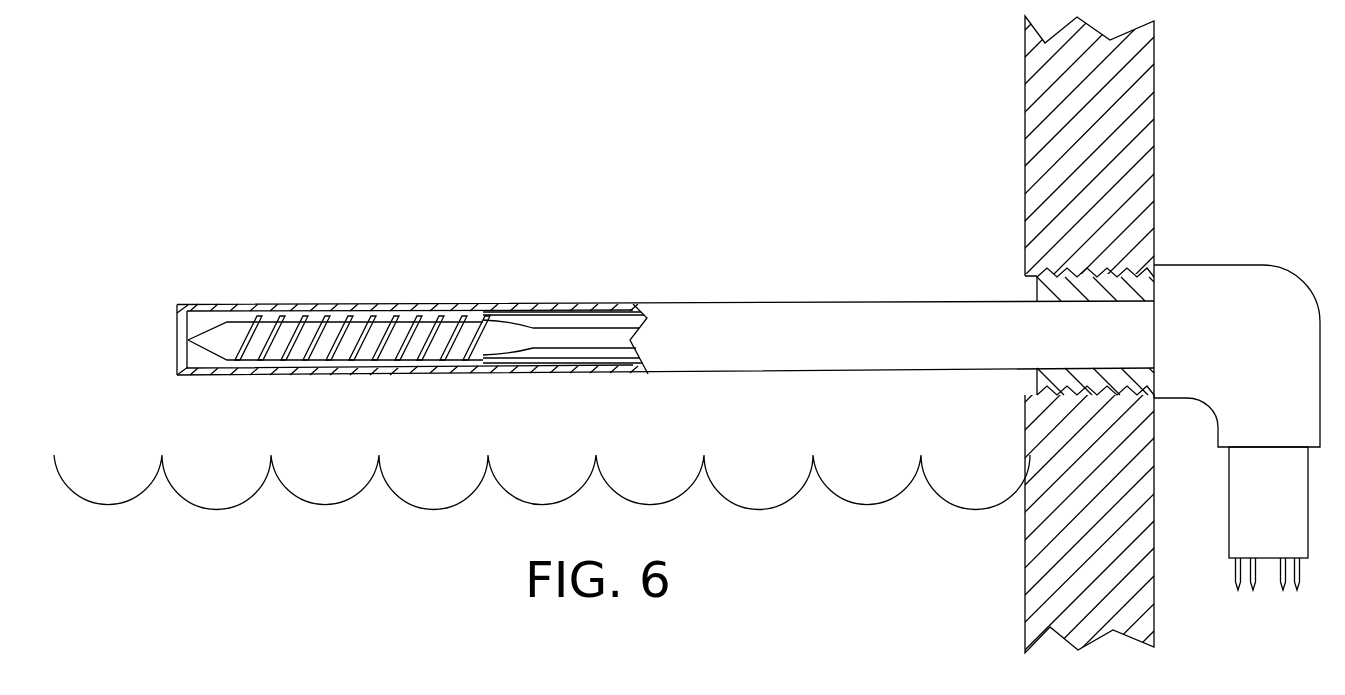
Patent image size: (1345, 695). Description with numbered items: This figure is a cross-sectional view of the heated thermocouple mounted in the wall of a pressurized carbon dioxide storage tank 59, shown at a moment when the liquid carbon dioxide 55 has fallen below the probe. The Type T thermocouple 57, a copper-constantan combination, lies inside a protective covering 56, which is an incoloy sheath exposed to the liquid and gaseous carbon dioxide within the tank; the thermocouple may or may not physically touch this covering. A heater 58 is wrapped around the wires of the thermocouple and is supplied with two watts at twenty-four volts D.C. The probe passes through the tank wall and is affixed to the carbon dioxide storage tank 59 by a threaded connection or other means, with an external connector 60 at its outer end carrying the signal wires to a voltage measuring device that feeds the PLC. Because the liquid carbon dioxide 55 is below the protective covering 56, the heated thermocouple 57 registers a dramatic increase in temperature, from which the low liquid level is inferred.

The liquid carbon dioxide 55 is at (132, 502).
The protective covering 56 is at (272, 307).
The Type T thermocouple 57 is at (207, 328).
The heater 58 is at (465, 323).
The carbon dioxide storage tank 59 is at (1117, 182).
The electrical connector 60 is at (1155, 265).